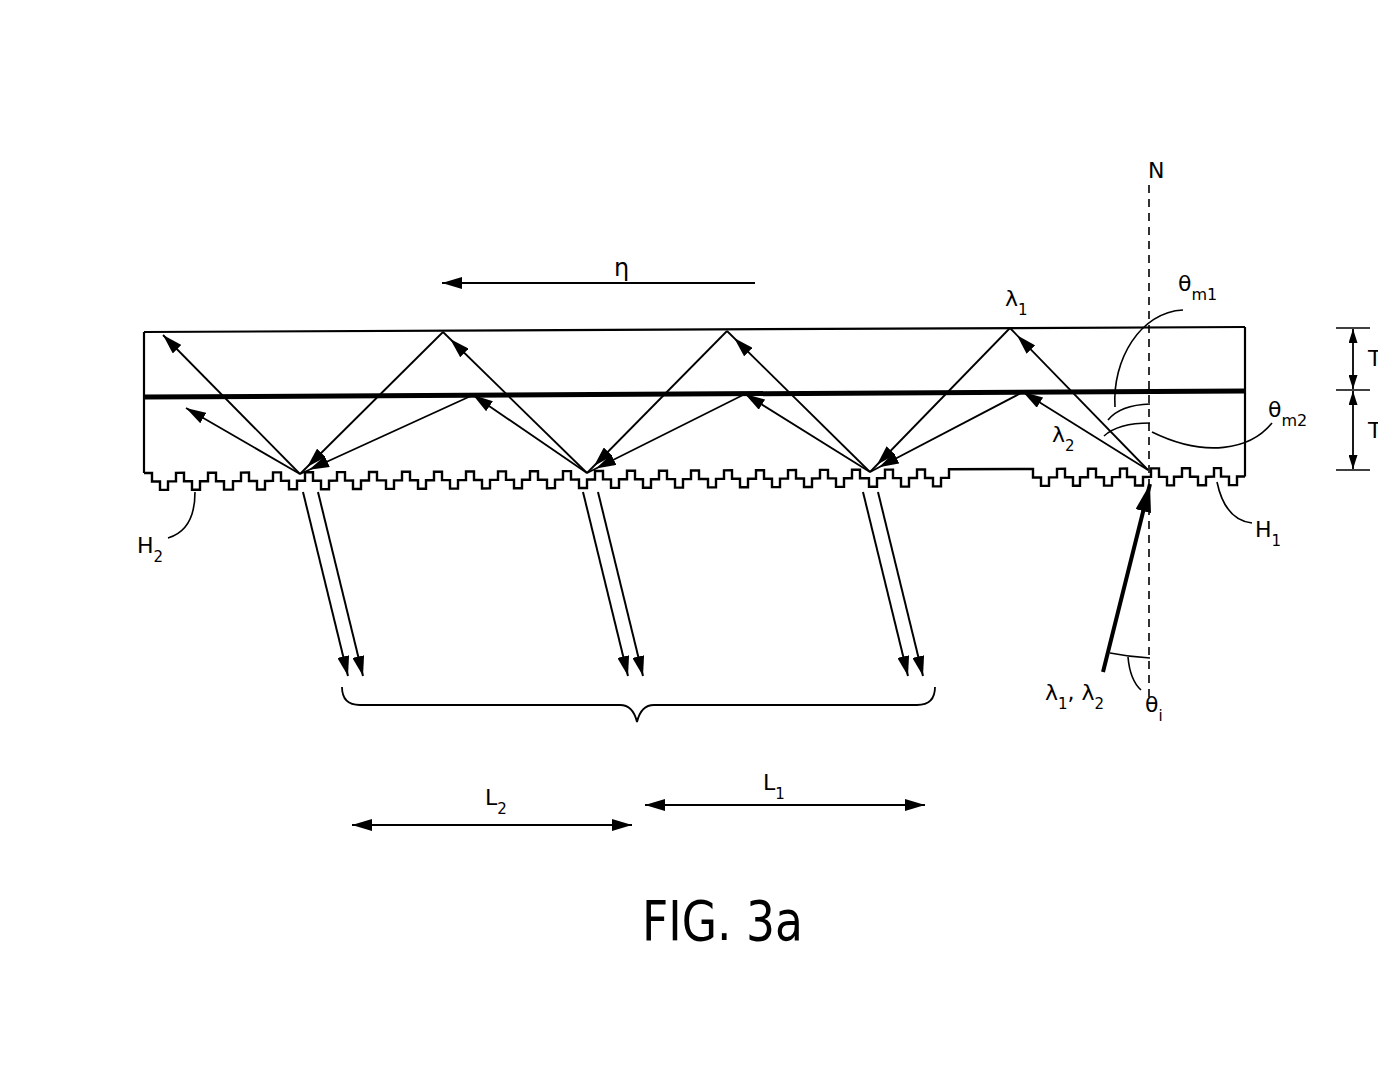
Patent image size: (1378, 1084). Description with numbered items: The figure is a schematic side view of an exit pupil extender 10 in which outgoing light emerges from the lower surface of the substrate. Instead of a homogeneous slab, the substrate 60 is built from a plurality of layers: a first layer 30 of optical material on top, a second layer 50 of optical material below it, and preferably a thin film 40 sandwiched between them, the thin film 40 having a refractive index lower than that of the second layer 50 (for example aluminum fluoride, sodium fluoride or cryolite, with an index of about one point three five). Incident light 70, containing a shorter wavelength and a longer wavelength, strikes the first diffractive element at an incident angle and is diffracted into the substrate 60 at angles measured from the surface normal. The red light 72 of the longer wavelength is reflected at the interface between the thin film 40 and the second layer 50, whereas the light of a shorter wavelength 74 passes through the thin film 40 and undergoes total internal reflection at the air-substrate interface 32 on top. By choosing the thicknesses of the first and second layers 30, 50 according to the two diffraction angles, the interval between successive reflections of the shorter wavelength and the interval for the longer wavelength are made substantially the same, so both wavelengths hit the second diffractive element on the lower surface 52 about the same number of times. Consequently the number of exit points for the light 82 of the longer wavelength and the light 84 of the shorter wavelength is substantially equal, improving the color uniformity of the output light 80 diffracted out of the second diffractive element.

The exit pupil extender 10 is at (884, 194).
The first layer 30 is at (160, 378).
The air-substrate interface 32 is at (207, 332).
The thin film 40 is at (148, 397).
The second layer 50 is at (147, 444).
The lower surface 52 is at (972, 474).
The substrate 60 is at (1282, 371).
The incident light 70 is at (1115, 615).
The red light 72 is at (773, 414).
The light of a shorter wavelength 74 is at (780, 381).
The output light 80 is at (638, 725).
The light (lambda_2) 82 is at (337, 568).
The light (lambda_1) 84 is at (324, 579).